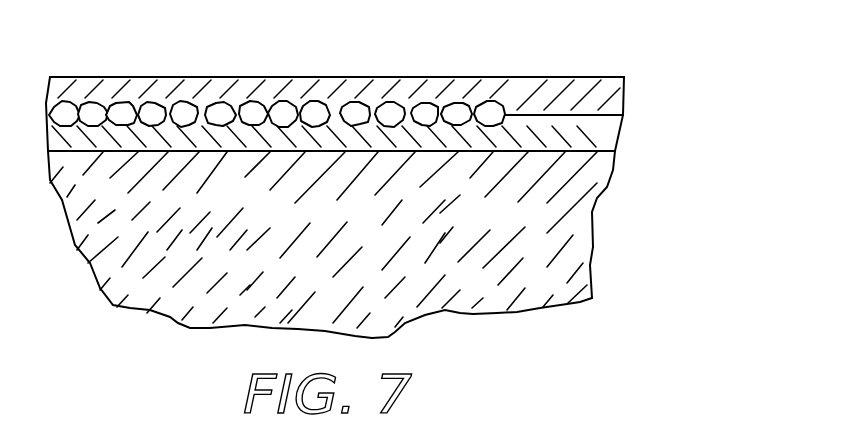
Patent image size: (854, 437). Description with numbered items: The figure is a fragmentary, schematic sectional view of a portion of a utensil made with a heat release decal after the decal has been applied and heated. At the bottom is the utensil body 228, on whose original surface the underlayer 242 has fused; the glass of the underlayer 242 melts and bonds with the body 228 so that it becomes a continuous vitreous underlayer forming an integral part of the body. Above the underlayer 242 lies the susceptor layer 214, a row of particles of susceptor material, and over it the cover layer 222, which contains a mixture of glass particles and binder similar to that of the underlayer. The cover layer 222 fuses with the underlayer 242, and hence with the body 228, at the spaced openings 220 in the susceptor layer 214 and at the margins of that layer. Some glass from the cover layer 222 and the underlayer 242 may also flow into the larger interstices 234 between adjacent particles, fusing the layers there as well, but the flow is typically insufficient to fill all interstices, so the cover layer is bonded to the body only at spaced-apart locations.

The susceptor layer 214 is at (377, 110).
The spaced openings 220 is at (523, 115).
The cover layer 222 is at (607, 95).
The body 228 is at (568, 227).
The larger interstices 234 is at (338, 112).
The underlayer 242 is at (600, 143).